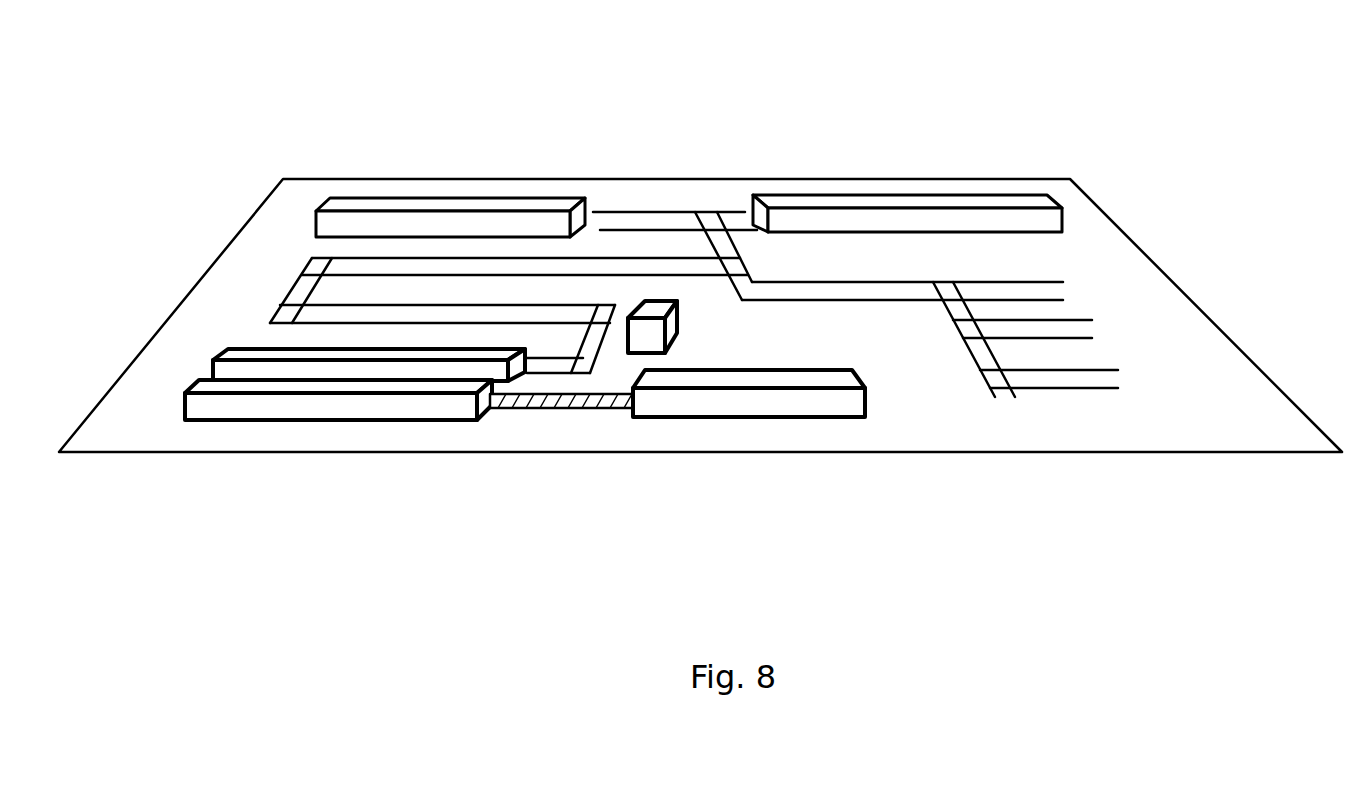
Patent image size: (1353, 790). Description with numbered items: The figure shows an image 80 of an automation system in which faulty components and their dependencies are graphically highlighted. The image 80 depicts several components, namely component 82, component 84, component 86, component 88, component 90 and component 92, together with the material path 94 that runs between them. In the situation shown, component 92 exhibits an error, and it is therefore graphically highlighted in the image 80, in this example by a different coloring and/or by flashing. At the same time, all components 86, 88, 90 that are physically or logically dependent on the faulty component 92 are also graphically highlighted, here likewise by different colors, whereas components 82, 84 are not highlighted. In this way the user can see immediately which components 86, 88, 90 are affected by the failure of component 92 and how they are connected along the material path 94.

The image 80 is at (1092, 149).
The component 82 is at (437, 198).
The component 84 is at (832, 196).
The component 86 is at (258, 346).
The component 88 is at (291, 421).
The component 90 is at (706, 420).
The faulty component 92 is at (683, 335).
The material path 94 is at (671, 210).